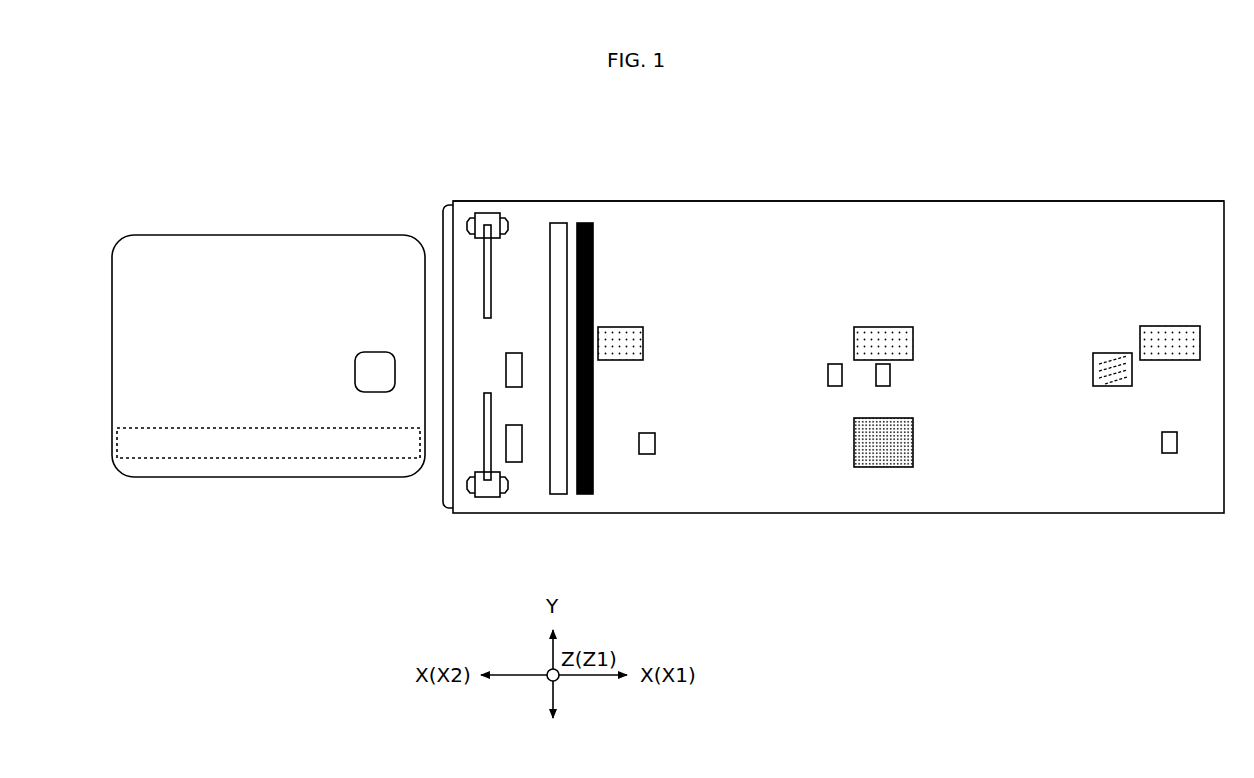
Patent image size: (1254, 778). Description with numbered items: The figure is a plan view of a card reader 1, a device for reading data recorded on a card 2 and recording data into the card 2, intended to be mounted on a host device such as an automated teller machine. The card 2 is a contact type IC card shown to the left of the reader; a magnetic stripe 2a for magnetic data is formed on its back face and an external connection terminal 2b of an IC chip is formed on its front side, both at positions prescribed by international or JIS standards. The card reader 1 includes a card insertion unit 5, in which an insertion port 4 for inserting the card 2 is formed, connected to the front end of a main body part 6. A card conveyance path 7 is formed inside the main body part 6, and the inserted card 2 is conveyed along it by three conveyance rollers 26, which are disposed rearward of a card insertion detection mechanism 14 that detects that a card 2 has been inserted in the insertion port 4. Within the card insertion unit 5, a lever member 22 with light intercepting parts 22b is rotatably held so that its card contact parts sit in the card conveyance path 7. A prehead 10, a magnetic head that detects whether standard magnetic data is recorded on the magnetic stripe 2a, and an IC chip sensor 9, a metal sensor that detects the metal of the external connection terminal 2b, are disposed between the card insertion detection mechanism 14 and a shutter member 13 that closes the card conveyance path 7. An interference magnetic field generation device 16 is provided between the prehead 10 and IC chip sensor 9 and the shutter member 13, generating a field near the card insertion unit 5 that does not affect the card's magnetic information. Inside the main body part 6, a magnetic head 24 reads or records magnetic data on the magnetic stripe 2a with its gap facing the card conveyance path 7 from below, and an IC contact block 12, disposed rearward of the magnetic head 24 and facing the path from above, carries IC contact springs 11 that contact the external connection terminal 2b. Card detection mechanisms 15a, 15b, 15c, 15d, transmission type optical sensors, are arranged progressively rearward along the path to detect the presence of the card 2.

The card reader 1 is at (931, 195).
The card 2 is at (263, 233).
The magnetic stripe 2a is at (267, 426).
The external connection terminal 2b is at (376, 352).
The insertion port 4 is at (443, 242).
The card insertion unit 5 is at (518, 201).
The main body part 6 is at (762, 201).
The card conveyance path 7 is at (966, 256).
The IC chip sensor 9 is at (520, 353).
The prehead 10 is at (522, 425).
The IC contact springs 11 is at (1126, 378).
The IC contact block 12 is at (1111, 353).
The shutter member 13 is at (586, 223).
The card insertion detection mechanism 14 is at (472, 506).
The card detection mechanism 15a is at (648, 455).
The card detection mechanism 15b is at (842, 374).
The card detection mechanism 15c is at (891, 372).
The card detection mechanism 15d is at (1168, 455).
The interference magnetic field generation device 16 is at (556, 223).
The lever member 22 is at (486, 214).
The light intercepting parts 22b is at (491, 300).
The magnetic head 24 is at (897, 468).
The conveyance rollers 26 is at (645, 340).